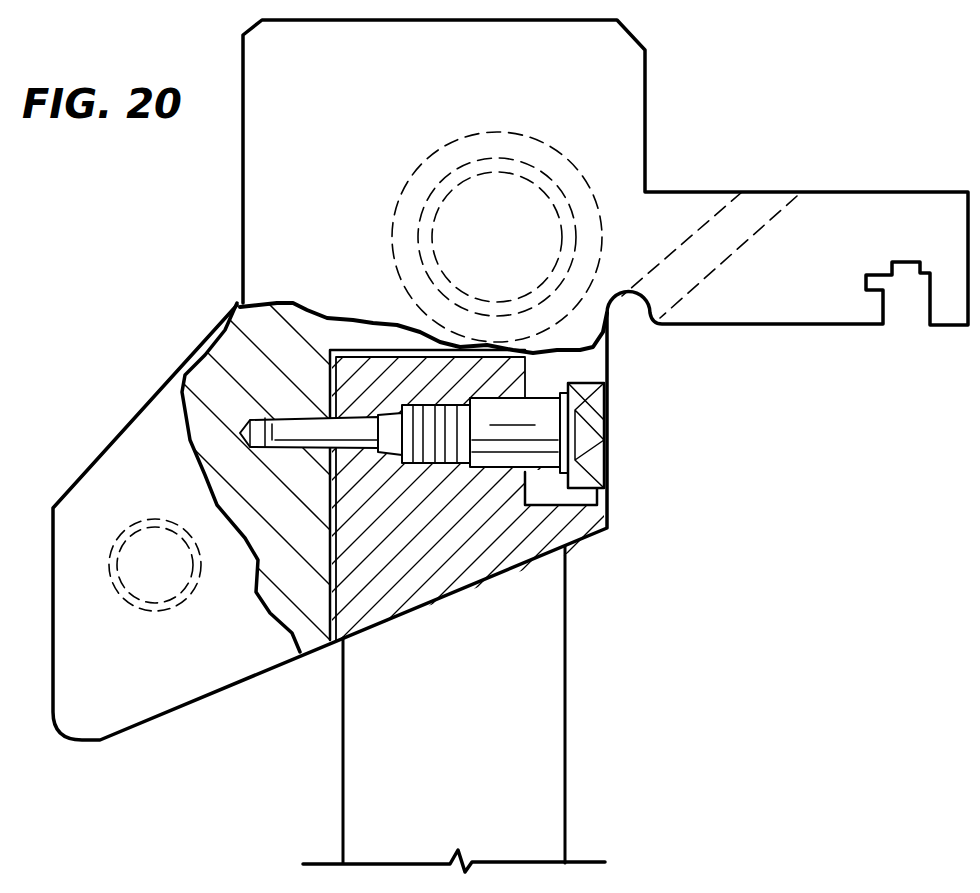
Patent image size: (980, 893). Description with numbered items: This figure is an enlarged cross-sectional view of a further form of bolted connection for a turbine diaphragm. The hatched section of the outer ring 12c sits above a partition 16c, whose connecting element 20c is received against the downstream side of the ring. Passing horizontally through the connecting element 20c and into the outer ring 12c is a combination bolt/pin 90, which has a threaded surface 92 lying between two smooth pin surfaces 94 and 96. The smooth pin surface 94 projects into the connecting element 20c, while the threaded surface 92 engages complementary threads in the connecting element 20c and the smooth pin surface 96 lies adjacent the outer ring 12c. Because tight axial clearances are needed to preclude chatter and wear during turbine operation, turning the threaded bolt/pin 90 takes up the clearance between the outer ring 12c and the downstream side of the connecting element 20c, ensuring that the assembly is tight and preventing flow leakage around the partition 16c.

The outer ring 12c is at (293, 303).
The partition 16c is at (343, 720).
The connecting element 20c is at (365, 587).
The smooth pin surface 94 is at (345, 452).
The threaded surface 92 is at (445, 465).
The smooth pin surface 96 is at (508, 470).
The combination bolt/pin 90 is at (607, 407).